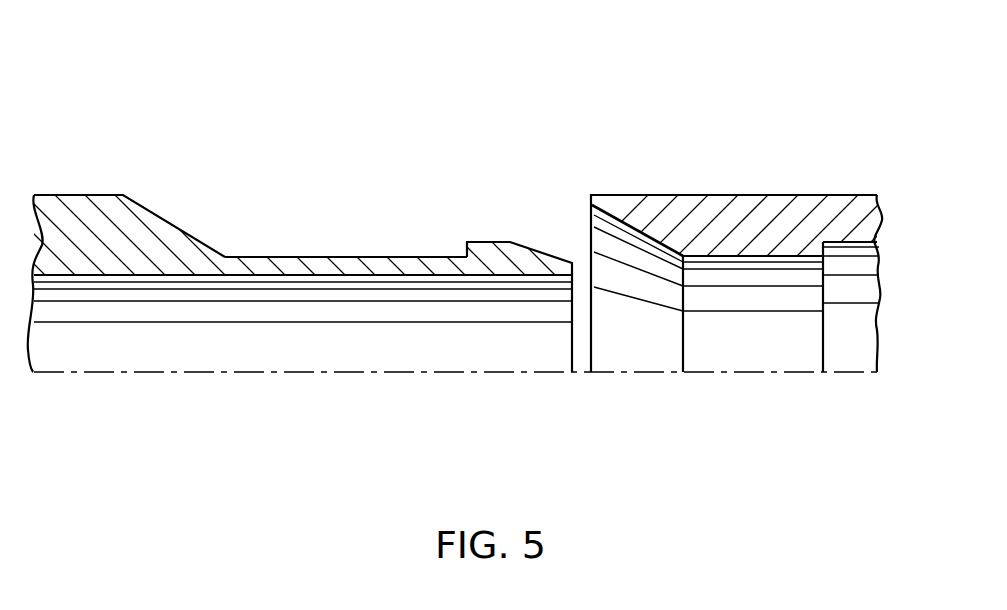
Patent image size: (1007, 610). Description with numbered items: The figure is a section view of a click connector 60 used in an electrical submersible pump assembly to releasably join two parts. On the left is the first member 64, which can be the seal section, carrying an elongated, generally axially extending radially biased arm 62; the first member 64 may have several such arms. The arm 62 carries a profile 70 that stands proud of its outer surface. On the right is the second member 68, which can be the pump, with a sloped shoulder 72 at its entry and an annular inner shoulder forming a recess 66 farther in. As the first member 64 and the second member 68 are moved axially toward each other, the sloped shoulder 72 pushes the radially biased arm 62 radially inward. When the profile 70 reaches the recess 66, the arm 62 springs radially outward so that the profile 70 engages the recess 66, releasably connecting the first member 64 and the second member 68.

The click connector 60 is at (593, 88).
The radially biased arm 62 is at (365, 257).
The first member 64 is at (127, 227).
The recess 66 is at (832, 250).
The second member 68 is at (778, 207).
The profile 70 is at (463, 250).
The sloped shoulder 72 is at (657, 240).